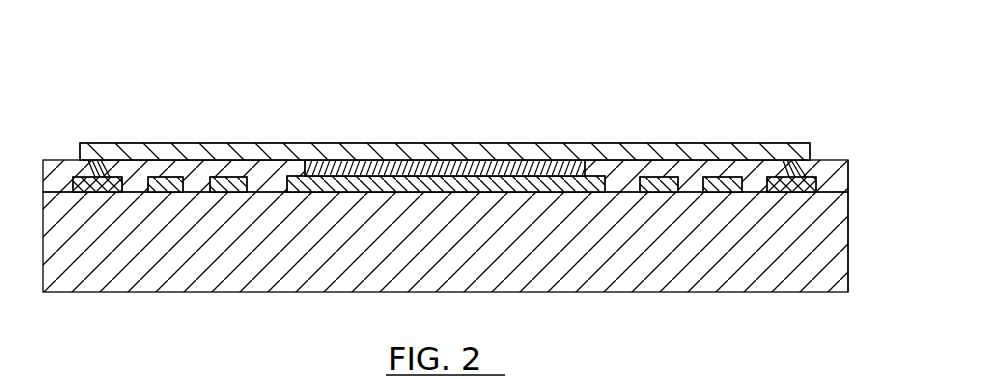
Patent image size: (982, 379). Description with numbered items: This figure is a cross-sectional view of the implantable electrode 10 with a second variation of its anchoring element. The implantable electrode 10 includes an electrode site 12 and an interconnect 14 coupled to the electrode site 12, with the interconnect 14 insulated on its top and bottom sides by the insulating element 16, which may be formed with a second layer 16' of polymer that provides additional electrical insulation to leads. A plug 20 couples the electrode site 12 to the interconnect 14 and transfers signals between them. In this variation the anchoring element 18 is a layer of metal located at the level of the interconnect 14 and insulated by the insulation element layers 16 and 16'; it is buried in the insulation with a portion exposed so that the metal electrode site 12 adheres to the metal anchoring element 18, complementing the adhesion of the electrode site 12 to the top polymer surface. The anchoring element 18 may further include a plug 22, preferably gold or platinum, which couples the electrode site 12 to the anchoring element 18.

The implantable electrode 10 is at (445, 192).
The electrode site 12 is at (522, 144).
The interconnect 14 is at (336, 184).
The insulating element 16 is at (445, 269).
The second layer 16' is at (827, 183).
The anchoring element 18 is at (762, 188).
The plug 20 is at (410, 170).
The plug 22 is at (800, 178).